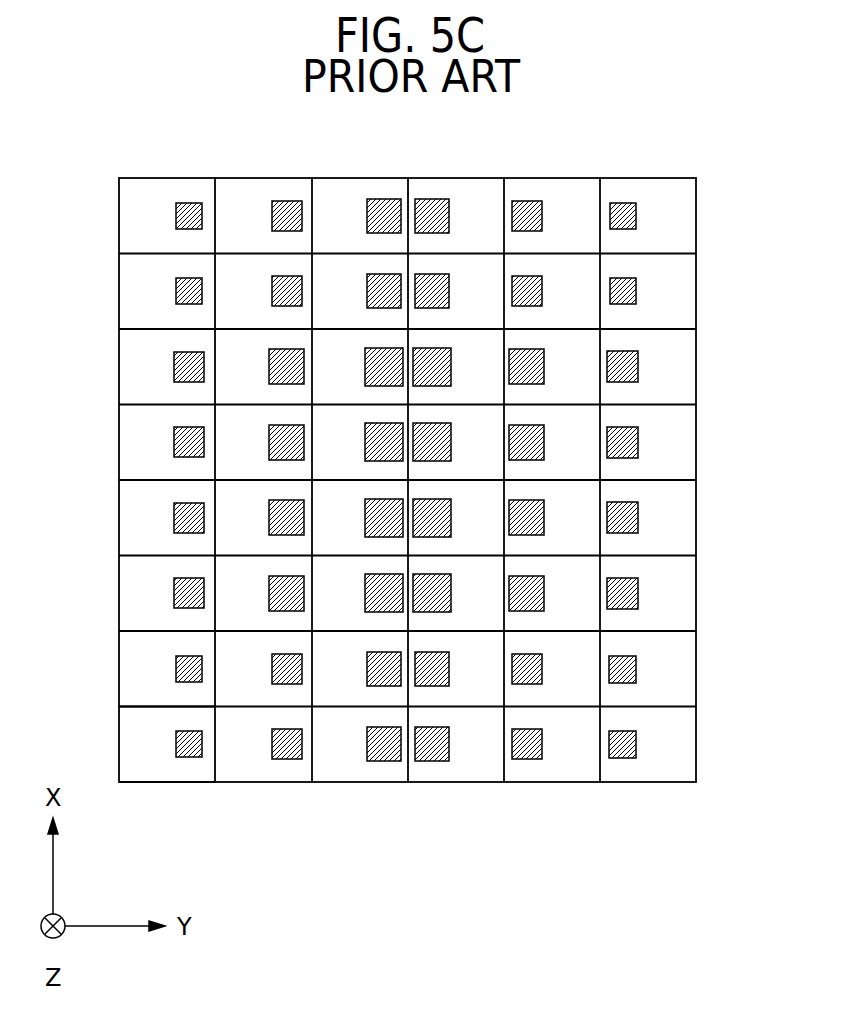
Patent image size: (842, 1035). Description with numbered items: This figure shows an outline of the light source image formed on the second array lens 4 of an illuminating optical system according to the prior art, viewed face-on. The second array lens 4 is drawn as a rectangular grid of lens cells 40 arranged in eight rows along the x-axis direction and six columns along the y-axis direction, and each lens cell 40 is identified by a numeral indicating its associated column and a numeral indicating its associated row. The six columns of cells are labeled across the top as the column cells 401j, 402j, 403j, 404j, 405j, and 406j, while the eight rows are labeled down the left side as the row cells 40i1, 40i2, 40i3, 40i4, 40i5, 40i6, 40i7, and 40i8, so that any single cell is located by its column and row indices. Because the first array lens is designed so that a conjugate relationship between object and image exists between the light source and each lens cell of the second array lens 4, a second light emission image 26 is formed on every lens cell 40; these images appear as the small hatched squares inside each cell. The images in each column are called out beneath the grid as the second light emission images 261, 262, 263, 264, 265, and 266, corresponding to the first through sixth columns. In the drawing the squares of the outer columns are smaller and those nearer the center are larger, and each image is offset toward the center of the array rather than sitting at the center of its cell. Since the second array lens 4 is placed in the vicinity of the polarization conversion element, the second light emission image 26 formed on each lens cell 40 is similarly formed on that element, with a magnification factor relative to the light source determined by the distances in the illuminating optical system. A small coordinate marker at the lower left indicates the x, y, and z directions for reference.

The second array lens 4 is at (696, 364).
The lens cell 40 is at (367, 451).
The lens cells of the first column 401j is at (168, 178).
The lens cells of the second column 402j is at (264, 178).
The lens cells of the third column 403j is at (359, 178).
The lens cells of the fourth column 404j is at (457, 178).
The lens cells of the fifth column 405j is at (553, 178).
The lens cells of the sixth column 406j is at (647, 178).
The lens cells of the first row 40i1 is at (128, 215).
The lens cells of the second row 40i2 is at (128, 291).
The lens cells of the third row 40i3 is at (128, 366).
The lens cells of the fourth row 40i4 is at (128, 442).
The lens cells of the fifth row 40i5 is at (128, 517).
The lens cells of the sixth row 40i6 is at (128, 593).
The lens cells of the seventh row 40i7 is at (128, 668).
The lens cells of the eighth row 40i8 is at (128, 744).
The second light emission image 26 is at (410, 525).
The second light emission image in the first column 261 is at (158, 782).
The second light emission image in the second column 262 is at (255, 782).
The second light emission image in the third column 263 is at (352, 782).
The second light emission image in the fourth column 264 is at (448, 782).
The second light emission image in the fifth column 265 is at (544, 782).
The second light emission image in the sixth column 266 is at (639, 782).